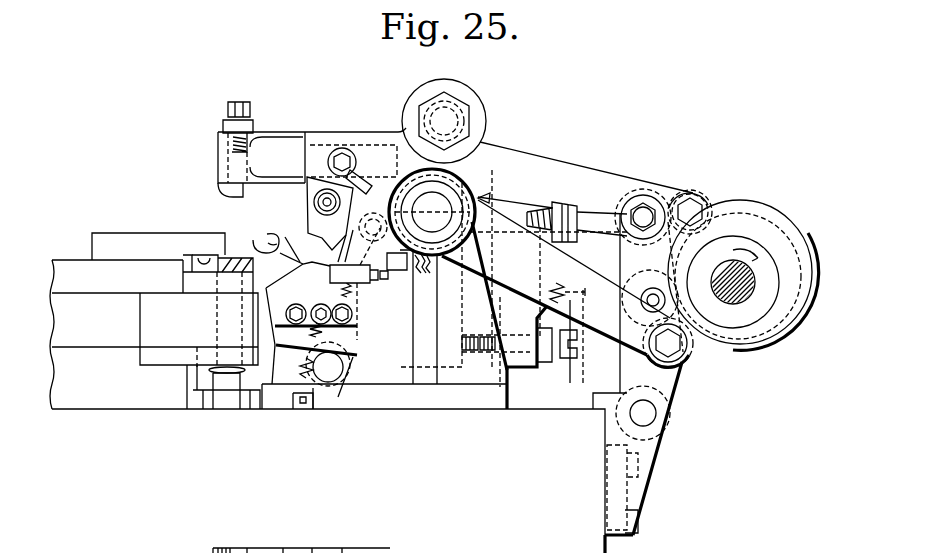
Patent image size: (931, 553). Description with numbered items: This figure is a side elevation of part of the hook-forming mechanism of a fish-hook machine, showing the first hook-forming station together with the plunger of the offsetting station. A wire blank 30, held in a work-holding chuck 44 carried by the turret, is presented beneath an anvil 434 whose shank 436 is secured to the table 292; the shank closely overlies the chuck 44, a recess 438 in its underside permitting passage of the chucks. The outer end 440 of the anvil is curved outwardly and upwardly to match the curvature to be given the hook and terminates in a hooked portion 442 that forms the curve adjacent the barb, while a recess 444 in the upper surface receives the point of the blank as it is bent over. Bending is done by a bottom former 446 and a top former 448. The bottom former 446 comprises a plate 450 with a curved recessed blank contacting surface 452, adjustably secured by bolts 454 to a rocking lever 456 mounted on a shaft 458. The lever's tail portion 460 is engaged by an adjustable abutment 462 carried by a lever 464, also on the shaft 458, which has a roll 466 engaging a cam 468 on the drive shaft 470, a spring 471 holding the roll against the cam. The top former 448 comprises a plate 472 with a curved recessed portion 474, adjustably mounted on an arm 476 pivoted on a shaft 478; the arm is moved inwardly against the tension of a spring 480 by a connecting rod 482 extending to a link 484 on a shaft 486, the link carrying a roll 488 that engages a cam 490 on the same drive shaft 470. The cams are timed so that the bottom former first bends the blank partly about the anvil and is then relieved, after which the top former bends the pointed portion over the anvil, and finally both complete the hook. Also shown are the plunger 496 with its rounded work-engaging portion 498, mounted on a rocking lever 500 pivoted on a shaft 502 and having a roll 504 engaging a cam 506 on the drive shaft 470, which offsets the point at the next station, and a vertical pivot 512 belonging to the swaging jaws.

The blank 30 is at (203, 272).
The work-holding chuck 44 is at (226, 287).
The table 292 is at (78, 277).
The anvil 434 is at (240, 244).
The shank 436 is at (127, 243).
The recess 438 is at (203, 257).
The outer end of the anvil 440 is at (283, 253).
The hooked portion 442 is at (281, 238).
The recess 444 is at (256, 241).
The bottom former 446 is at (272, 395).
The top former 448 is at (298, 190).
The plate 450 is at (273, 287).
The curved recessed blank contacting surface 452 is at (335, 268).
The bolts 454 is at (330, 311).
The rocking lever 456 is at (343, 342).
The shaft 458 is at (442, 200).
The tail portion 460 is at (463, 370).
The adjustable abutment 462 is at (564, 358).
The lever 464 is at (518, 358).
The roll 466 is at (688, 370).
The cam 468 is at (714, 340).
The drive shaft 470 is at (745, 296).
The spring 471 is at (314, 386).
The plate 472 is at (312, 207).
The curved recessed portion 474 is at (330, 222).
The arm 476 is at (376, 200).
The shaft 478 is at (332, 381).
The spring 480 is at (551, 287).
The connecting rod 482 is at (530, 213).
The link 484 is at (626, 256).
The shaft 486 is at (650, 420).
The roll 488 is at (630, 322).
The cam 490 is at (812, 240).
The plunger 496 is at (233, 183).
The rounded work-engaging portion 498 is at (234, 195).
The rocking lever 500 is at (378, 170).
The shaft 502 is at (458, 112).
The roll 504 is at (686, 196).
The cam 506 is at (729, 215).
The vertical pivot 512 is at (302, 552).